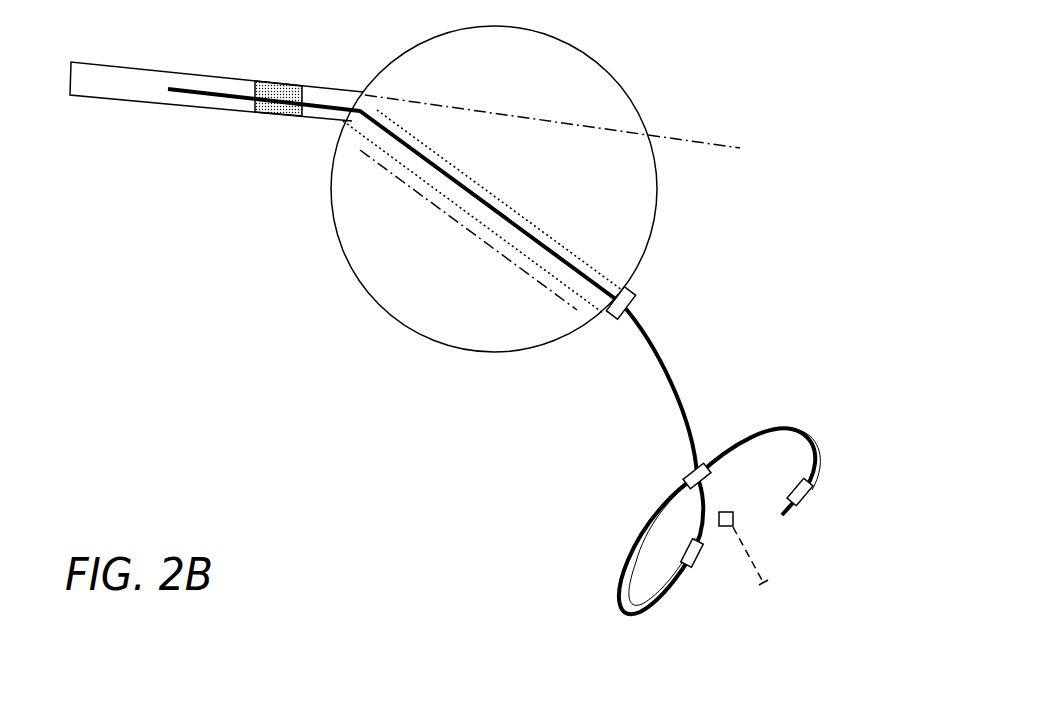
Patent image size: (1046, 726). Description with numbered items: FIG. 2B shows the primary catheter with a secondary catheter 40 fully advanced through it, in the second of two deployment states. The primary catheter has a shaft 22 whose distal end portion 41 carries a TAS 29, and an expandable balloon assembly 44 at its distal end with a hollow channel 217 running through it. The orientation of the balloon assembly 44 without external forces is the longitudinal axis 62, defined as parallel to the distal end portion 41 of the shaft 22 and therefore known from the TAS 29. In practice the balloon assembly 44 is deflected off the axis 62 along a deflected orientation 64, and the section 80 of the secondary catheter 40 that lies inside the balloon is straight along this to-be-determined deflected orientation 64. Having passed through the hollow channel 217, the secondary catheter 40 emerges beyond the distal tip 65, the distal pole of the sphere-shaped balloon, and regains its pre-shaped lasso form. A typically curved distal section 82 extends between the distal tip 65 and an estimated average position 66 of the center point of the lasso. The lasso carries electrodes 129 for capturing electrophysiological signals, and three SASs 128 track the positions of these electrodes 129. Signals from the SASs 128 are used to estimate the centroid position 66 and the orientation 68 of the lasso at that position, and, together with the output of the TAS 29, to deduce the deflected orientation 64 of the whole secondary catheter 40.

The shaft 22 is at (114, 98).
The TAS 29 is at (270, 114).
The secondary catheter 40 is at (203, 96).
The distal end portion 41 is at (175, 222).
The expandable balloon assembly 44 is at (693, 97).
The longitudinal axis 62 is at (546, 124).
The deflected orientation 64 is at (540, 286).
The distal tip 65 is at (633, 300).
The estimated average position 66 is at (733, 514).
The orientation 68 is at (770, 583).
The section 80 is at (482, 275).
The curved distal section 82 is at (592, 430).
The SASs 128 is at (684, 470).
The electrodes 129 is at (640, 532).
The hollow channel 217 is at (540, 226).